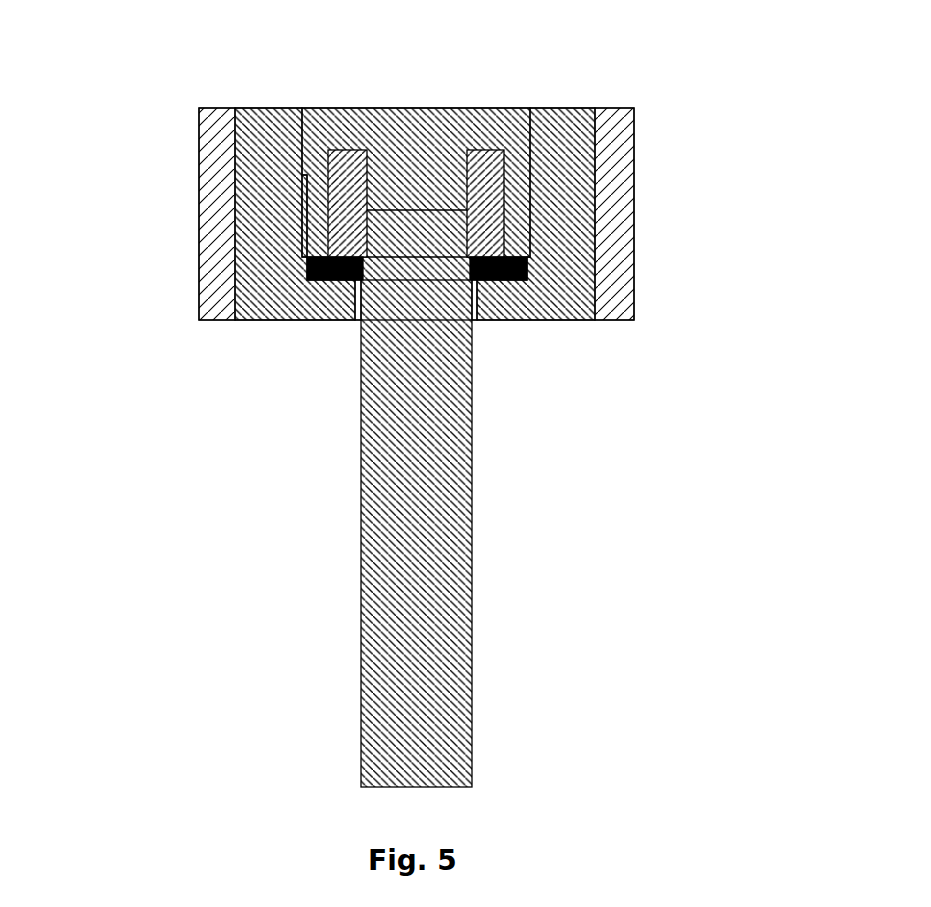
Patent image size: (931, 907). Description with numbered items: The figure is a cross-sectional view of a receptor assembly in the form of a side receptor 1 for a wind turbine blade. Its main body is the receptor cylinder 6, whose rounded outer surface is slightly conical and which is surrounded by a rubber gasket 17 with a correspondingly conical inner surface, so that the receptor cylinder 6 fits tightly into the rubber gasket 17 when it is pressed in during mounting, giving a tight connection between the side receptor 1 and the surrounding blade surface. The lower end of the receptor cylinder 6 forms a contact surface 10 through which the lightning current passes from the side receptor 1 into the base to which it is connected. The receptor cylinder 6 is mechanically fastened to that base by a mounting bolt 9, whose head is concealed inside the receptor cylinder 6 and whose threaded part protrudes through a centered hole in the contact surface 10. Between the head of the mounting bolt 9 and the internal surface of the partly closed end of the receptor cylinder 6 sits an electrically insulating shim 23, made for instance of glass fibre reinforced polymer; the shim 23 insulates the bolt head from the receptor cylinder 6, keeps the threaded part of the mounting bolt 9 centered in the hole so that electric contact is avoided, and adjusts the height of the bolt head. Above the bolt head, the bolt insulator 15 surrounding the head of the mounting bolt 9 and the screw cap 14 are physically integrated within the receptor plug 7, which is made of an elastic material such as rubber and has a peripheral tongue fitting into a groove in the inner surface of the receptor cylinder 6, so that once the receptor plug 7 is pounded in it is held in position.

The side receptor 1 is at (710, 465).
The receptor cylinder 6 is at (283, 302).
The receptor plug 7 is at (392, 124).
The mounting bolt 9 is at (425, 442).
The contact surface 10 is at (335, 319).
The screw cap 14 is at (400, 185).
The bolt insulator 15 is at (306, 183).
The rubber gasket 17 is at (217, 123).
The electrically insulating shim 23 is at (310, 268).